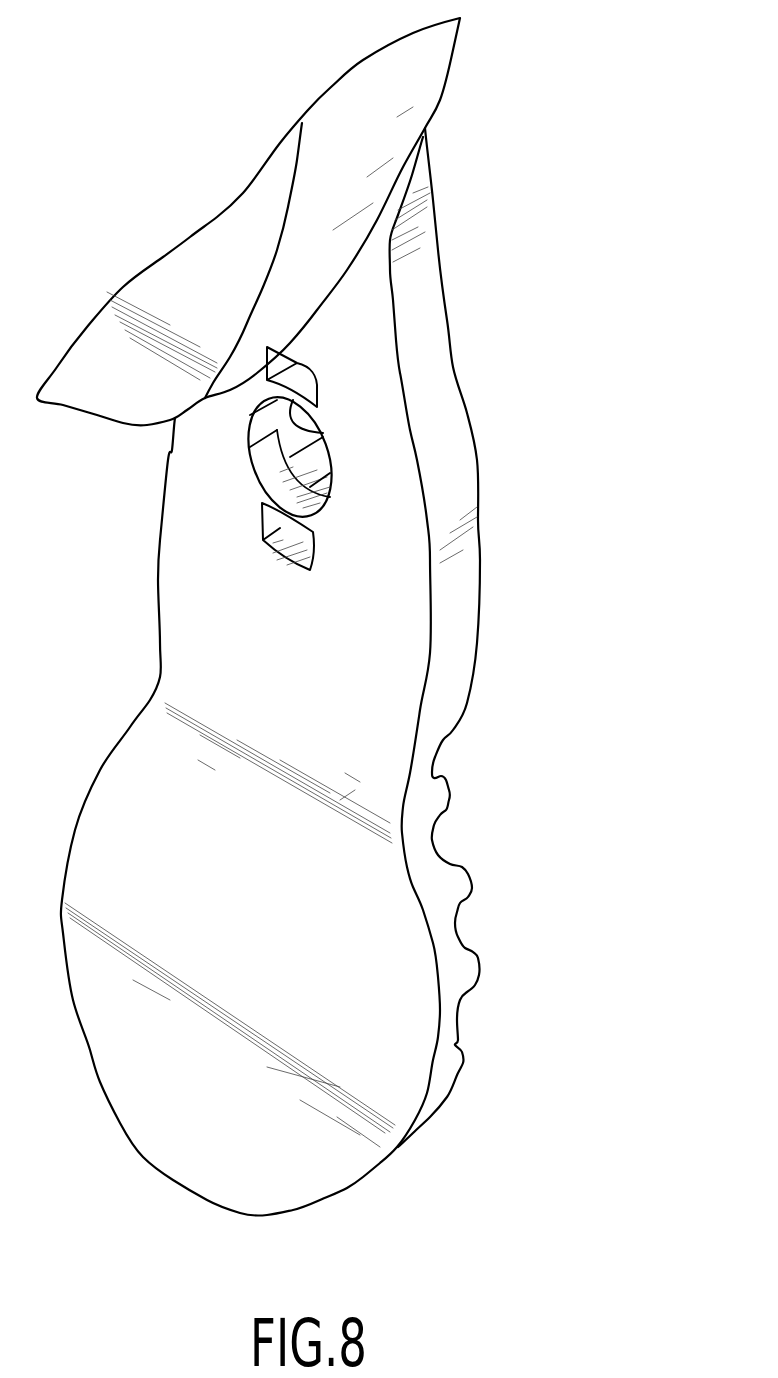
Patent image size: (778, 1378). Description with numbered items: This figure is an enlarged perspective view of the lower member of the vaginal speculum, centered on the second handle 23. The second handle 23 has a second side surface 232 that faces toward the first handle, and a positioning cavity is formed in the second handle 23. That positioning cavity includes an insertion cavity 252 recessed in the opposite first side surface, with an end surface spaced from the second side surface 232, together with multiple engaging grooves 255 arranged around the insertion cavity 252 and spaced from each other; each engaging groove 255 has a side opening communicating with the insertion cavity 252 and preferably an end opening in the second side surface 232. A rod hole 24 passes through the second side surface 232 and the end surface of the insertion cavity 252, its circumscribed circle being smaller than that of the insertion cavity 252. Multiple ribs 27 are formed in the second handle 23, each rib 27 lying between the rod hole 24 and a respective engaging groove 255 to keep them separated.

The second handle 23 is at (447, 235).
The second side surface 232 is at (373, 318).
The ribs 27 is at (322, 437).
The engaging grooves 255 is at (335, 473).
The insertion cavity 252 is at (281, 443).
The rod hole 24 is at (290, 494).